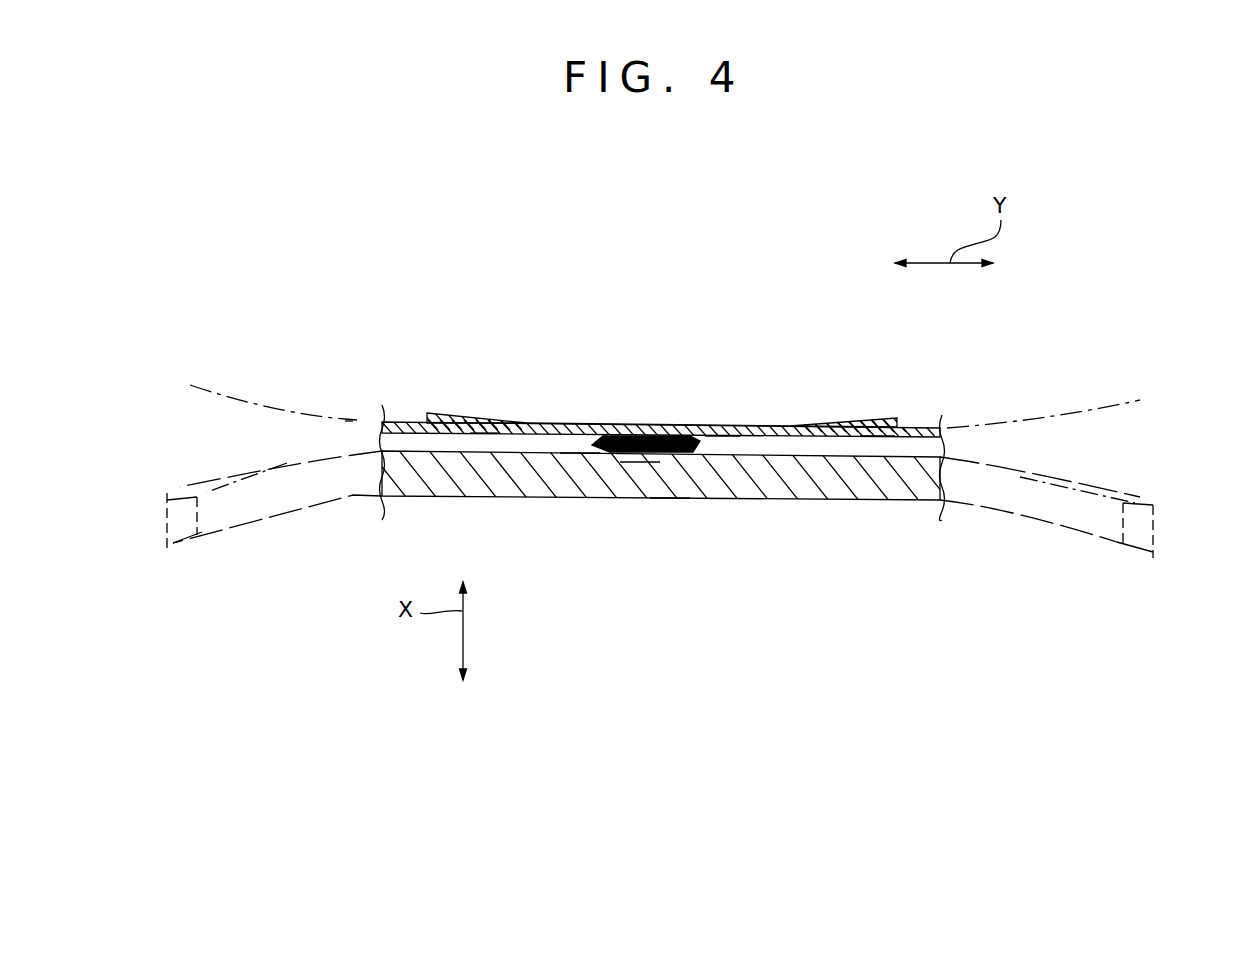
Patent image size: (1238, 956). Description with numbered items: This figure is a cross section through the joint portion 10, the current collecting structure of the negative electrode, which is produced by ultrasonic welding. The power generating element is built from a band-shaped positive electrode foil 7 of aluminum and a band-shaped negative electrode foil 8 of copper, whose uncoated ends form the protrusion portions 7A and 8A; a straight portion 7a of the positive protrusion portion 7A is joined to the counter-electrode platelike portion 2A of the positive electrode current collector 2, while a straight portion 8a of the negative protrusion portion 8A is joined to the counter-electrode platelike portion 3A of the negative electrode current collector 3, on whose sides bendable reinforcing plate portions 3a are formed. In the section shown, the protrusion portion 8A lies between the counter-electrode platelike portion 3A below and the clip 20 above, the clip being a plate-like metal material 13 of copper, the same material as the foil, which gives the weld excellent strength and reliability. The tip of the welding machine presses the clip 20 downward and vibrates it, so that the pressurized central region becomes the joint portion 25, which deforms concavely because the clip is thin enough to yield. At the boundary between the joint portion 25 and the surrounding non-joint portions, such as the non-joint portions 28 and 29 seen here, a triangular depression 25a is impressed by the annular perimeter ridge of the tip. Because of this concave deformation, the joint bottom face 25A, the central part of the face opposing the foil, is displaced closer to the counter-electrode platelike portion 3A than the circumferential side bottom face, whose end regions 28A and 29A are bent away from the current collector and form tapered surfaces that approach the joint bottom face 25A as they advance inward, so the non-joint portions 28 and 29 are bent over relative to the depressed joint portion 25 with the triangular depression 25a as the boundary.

The positive electrode current collector 2 is at (656, 500).
The negative electrode current collector 3 is at (880, 500).
The reinforcing plate portion 3a is at (253, 513).
The counter-electrode platelike portion 3A is at (667, 498).
The counter-electrode platelike portion 2A is at (696, 545).
The positive electrode foil 7 is at (665, 377).
The negative electrode foil 8 is at (1025, 420).
The straight portion 8a is at (583, 453).
The protrusion portion 8A is at (572, 537).
The straight portion 7a is at (572, 537).
The protrusion portion 7A is at (572, 537).
The joint portion 10 is at (639, 462).
The metal material 13 is at (646, 373).
The clip 20 is at (598, 422).
The joint portion 25 is at (707, 425).
The triangular depression 25a is at (532, 423).
The joint bottom face 25A is at (720, 436).
The non-joint portion 28 is at (861, 420).
The end region 28A is at (878, 433).
The non-joint portion 29 is at (468, 413).
The end region 29A is at (482, 433).